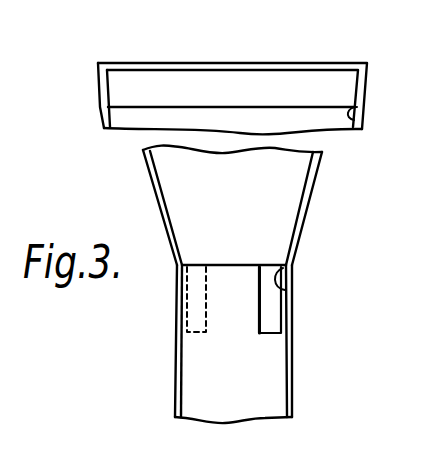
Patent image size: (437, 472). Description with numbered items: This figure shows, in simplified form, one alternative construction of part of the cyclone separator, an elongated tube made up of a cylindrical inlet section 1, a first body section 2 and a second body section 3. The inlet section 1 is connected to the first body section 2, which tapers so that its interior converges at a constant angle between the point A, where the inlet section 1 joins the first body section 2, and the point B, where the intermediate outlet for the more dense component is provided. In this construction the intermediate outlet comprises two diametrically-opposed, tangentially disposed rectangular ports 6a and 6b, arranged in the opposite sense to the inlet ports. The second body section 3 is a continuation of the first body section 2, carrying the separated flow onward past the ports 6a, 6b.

The cylindrical inlet section 1 is at (98, 80).
The point where the inlet section joins the first body section A is at (362, 120).
The first body section 2 is at (158, 208).
The second body section 3 is at (175, 382).
The rectangular port 6a is at (198, 312).
The rectangular port 6b is at (270, 317).
The point where the intermediate outlet is provided B is at (288, 288).